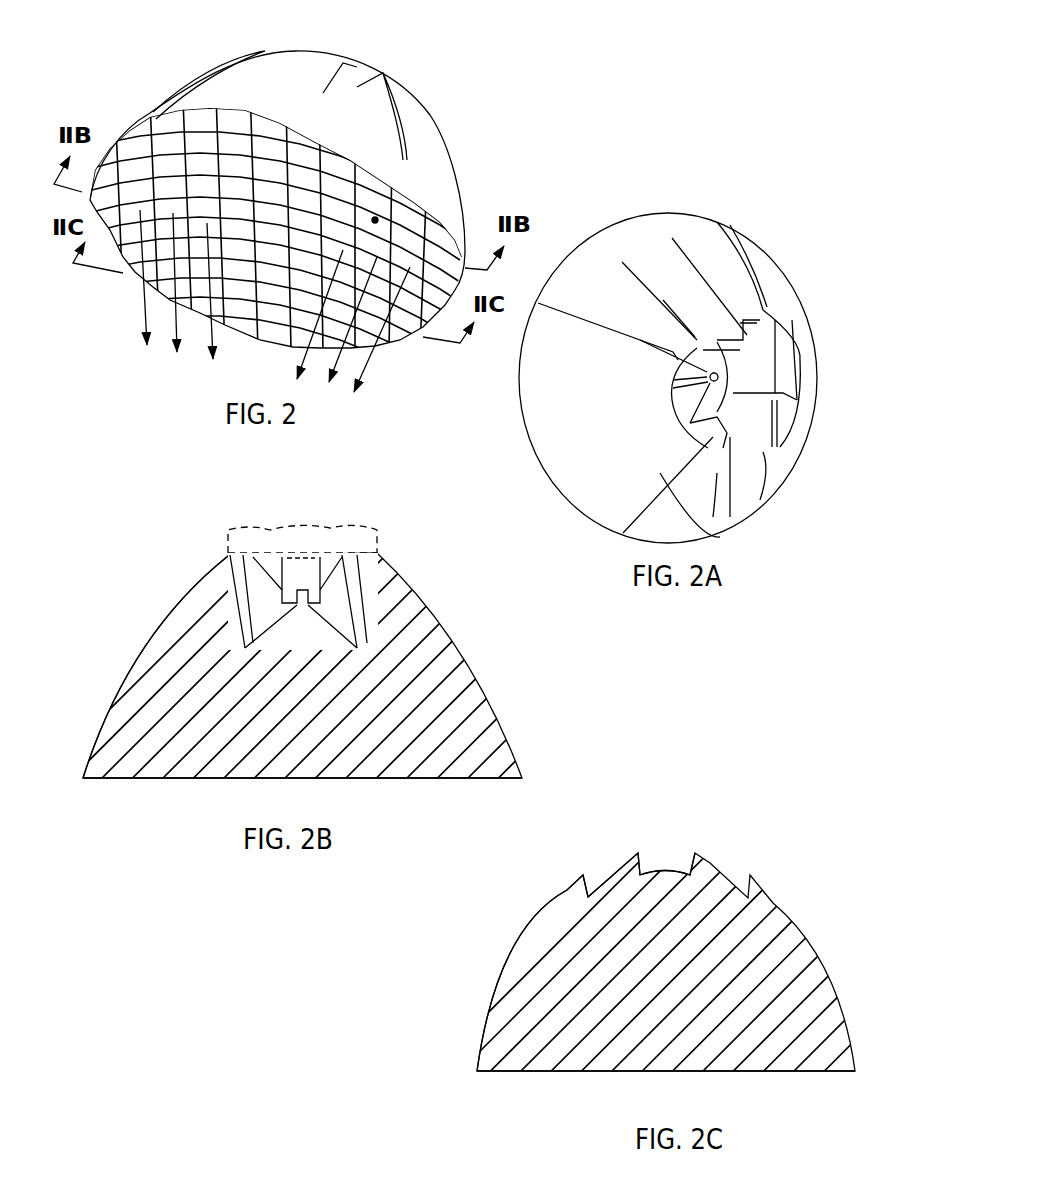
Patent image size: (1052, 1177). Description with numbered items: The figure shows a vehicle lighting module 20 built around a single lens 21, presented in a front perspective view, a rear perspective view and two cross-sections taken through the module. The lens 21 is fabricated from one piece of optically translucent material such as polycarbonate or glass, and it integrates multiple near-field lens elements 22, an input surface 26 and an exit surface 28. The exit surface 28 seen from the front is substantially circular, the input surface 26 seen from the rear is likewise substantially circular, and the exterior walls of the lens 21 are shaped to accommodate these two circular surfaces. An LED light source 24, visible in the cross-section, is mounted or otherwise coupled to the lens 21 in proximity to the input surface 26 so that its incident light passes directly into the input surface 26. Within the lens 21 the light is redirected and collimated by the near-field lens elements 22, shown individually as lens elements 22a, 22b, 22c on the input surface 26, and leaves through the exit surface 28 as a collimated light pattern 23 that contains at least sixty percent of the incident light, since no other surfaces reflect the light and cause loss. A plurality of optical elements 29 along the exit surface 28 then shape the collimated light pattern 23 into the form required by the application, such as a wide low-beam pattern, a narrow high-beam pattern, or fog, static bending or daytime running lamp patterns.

In FIG. 2, the vehicle lighting module 20 is at (462, 76).
In FIG. 2A, the vehicle lighting module 20 is at (772, 210).
In FIG. 2B, the vehicle lighting module 20 is at (402, 542).
In FIG. 2C, the vehicle lighting module 20 is at (745, 834).
In FIG. 2, the lens 21 is at (213, 85).
In FIG. 2A, the lens 21 is at (587, 447).
In FIG. 2B, the lens 21 is at (122, 682).
In FIG. 2C, the lens 21 is at (513, 968).
In FIG. 2, the near-field lens elements 22 is at (368, 78).
In FIG. 2A, the lens element 22a is at (717, 477).
In FIG. 2C, the lens element 22a is at (568, 888).
In FIG. 2A, the lens element 22b is at (660, 477).
In FIG. 2C, the lens element 22b is at (607, 877).
In FIG. 2A, the lens element 22c is at (763, 452).
In FIG. 2C, the lens element 22c is at (667, 867).
In FIG. 2, the collimated light pattern 23 is at (140, 317).
In FIG. 2B, the LED light source 24 is at (300, 570).
In FIG. 2A, the input surface 26 is at (728, 368).
In FIG. 2B, the input surface 26 is at (258, 622).
In FIG. 2, the exit surface 28 is at (376, 223).
In FIG. 2B, the exit surface 28 is at (178, 790).
In FIG. 2C, the exit surface 28 is at (538, 1084).
In FIG. 2, the optical elements 29 is at (122, 198).
In FIG. 2B, the optical elements 29 is at (473, 779).
In FIG. 2C, the optical elements 29 is at (837, 1072).